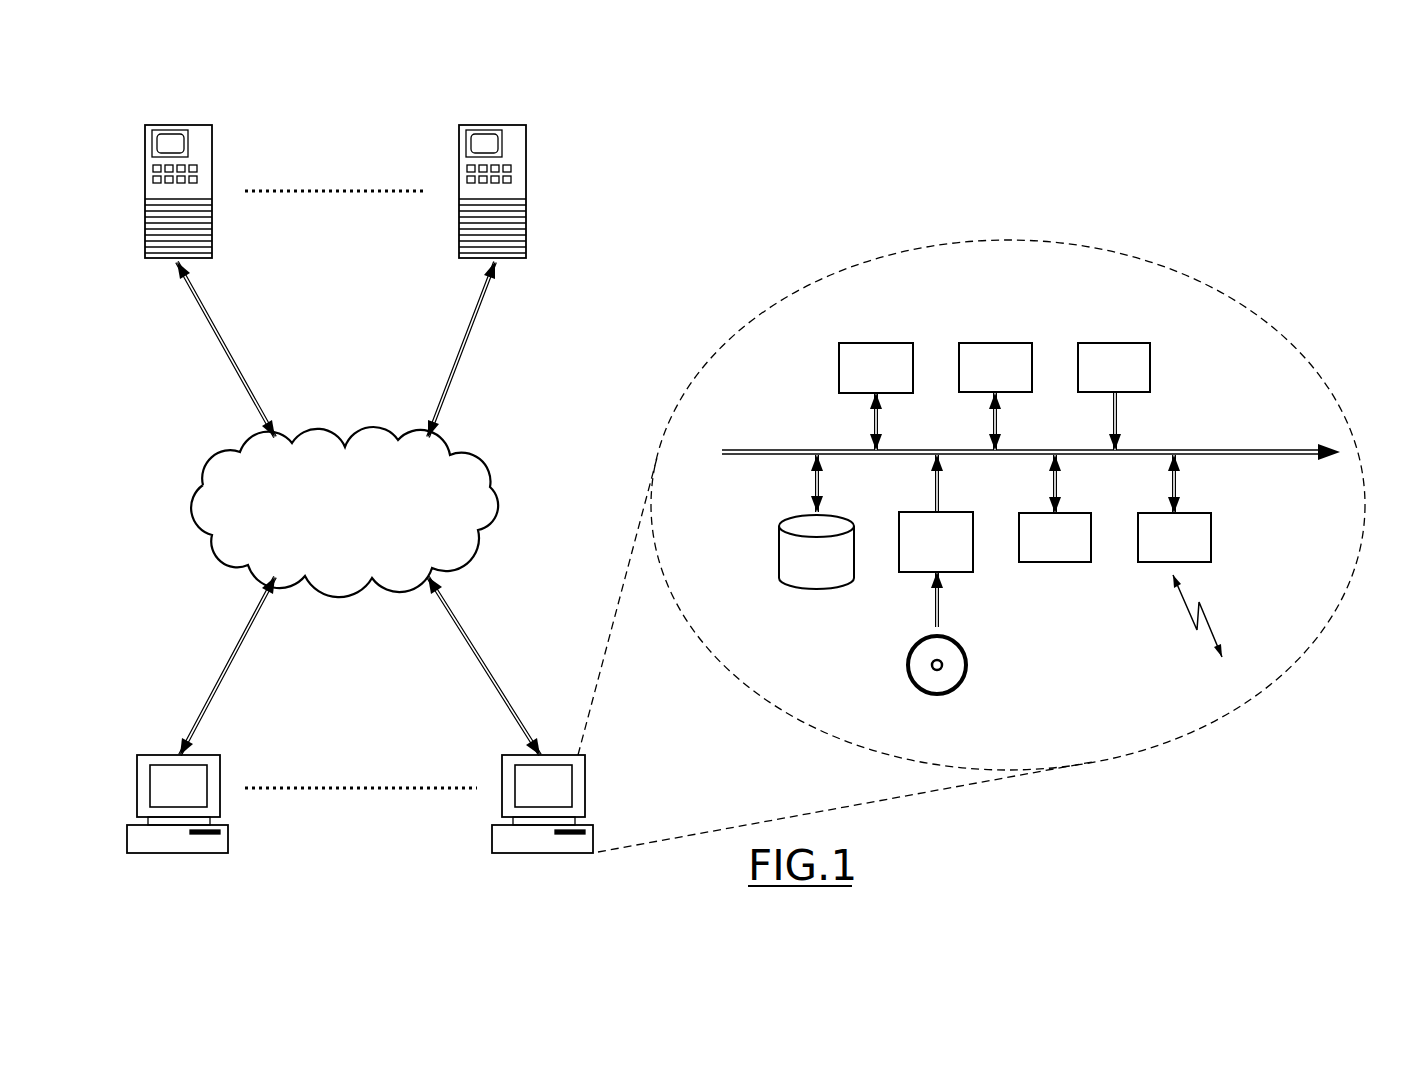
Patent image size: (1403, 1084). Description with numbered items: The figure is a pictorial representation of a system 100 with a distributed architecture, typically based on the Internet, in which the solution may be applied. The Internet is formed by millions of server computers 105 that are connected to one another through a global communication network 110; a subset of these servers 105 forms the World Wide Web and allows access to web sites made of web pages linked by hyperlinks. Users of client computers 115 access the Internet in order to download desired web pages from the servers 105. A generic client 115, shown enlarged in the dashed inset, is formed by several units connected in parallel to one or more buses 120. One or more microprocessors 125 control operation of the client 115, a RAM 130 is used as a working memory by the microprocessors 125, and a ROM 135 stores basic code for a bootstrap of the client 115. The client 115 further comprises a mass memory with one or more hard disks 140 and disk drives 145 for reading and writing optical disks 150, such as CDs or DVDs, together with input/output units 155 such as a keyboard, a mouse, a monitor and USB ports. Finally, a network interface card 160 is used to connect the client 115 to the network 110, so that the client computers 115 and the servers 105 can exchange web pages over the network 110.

The system 100 is at (683, 254).
The server computers 105 is at (335, 205).
The global communication network 110 is at (322, 522).
The client computers 115 is at (360, 828).
The buses 120 is at (1031, 473).
The microprocessors 125 is at (903, 352).
The RAM 130 is at (1023, 352).
The ROM 135 is at (1142, 352).
The hard disks 140 is at (783, 577).
The disk drives 145 is at (900, 571).
The optical disks 150 is at (892, 673).
The input/output units 155 is at (1082, 559).
The network interface card 160 is at (1208, 585).